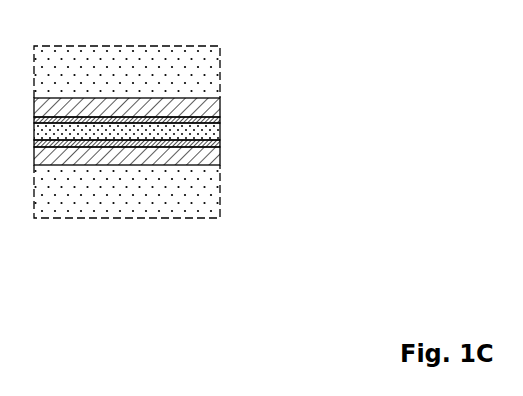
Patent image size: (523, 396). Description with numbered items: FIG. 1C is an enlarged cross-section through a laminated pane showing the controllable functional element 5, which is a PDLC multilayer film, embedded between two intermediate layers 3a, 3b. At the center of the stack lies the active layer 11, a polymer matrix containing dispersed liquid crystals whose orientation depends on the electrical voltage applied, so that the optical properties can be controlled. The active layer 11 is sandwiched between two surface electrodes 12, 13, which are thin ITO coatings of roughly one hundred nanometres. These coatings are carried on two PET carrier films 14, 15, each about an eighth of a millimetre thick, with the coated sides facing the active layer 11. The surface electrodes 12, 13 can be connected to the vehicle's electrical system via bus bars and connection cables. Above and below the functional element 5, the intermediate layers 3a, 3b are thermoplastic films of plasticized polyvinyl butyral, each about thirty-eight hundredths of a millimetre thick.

The intermediate layer 3a is at (193, 63).
The intermediate layer 3b is at (190, 205).
The controllable functional element 5 is at (193, 129).
The carrier film 14 is at (218, 98).
The surface electrode 12 is at (218, 118).
The active layer 11 is at (217, 132).
The surface electrode 13 is at (218, 143).
The carrier film 15 is at (165, 169).